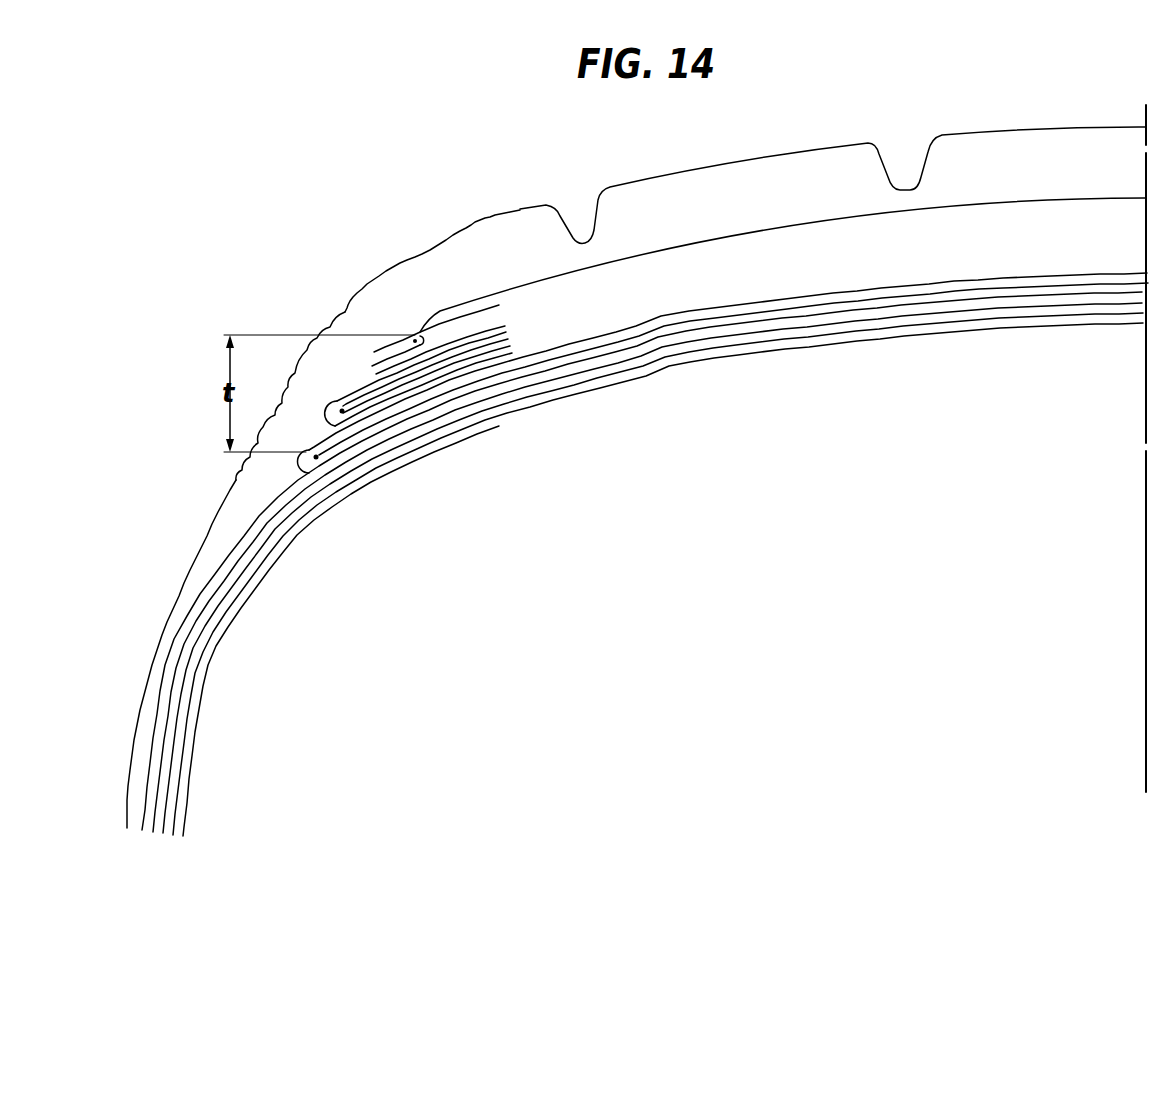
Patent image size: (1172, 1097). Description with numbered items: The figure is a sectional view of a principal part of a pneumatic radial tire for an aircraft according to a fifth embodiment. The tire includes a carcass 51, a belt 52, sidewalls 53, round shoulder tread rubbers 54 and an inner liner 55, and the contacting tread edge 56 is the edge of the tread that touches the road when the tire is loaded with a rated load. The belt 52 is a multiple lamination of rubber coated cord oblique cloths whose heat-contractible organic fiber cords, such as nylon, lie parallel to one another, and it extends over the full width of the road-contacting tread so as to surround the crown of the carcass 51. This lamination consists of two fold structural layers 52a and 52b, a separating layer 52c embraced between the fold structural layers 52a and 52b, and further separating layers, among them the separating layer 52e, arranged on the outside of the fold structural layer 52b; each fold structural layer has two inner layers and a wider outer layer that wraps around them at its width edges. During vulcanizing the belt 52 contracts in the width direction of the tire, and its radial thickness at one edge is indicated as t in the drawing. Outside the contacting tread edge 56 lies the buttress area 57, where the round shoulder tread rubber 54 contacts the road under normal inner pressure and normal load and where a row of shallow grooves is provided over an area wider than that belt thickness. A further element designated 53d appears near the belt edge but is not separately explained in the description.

The carcass 51 is at (156, 726).
The belt 52 is at (562, 290).
The fold structural layer 52a is at (308, 474).
The fold structural layer 52b is at (337, 400).
The separating layer 52c is at (331, 437).
The separating layer 52e is at (383, 341).
The sidewall 53 is at (158, 650).
The belt edge strip 53d is at (374, 367).
The round shoulder tread rubber 54 is at (459, 231).
The inner liner 55 is at (537, 391).
The contacting tread edge 56 is at (402, 260).
The buttress area 57 is at (299, 323).